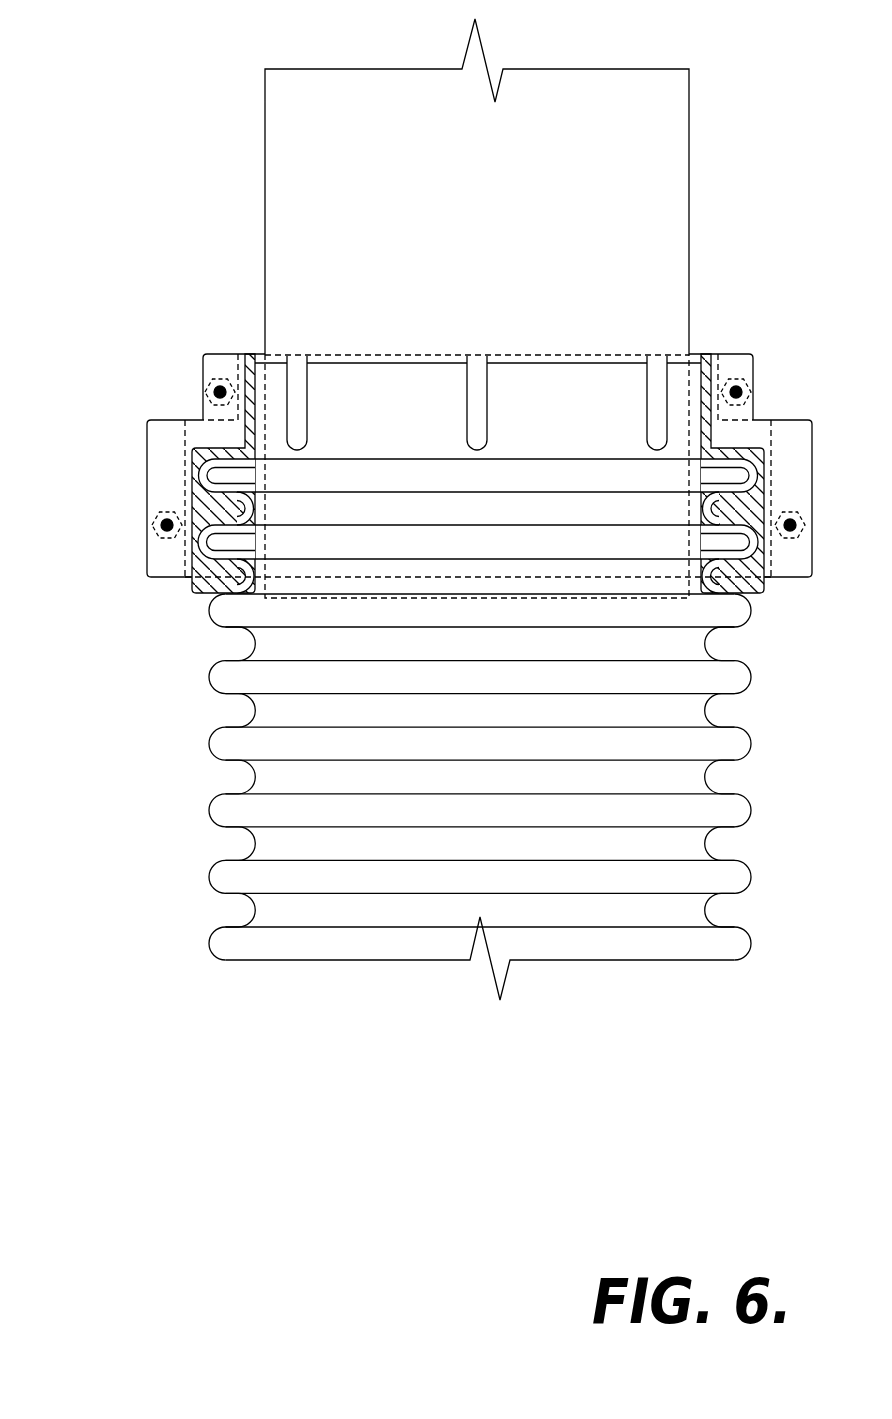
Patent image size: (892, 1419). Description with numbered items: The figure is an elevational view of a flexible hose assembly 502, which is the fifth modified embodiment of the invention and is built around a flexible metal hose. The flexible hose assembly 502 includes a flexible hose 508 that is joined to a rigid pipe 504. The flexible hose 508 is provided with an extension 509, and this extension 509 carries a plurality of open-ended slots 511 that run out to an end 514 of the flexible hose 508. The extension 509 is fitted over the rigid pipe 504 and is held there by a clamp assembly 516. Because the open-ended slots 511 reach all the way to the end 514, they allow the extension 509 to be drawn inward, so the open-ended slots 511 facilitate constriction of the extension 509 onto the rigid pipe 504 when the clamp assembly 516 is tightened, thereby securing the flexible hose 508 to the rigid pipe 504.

The flexible hose assembly 502 is at (165, 242).
The rigid pipe 504 is at (689, 62).
The flexible hose 508 is at (733, 960).
The extension 509 is at (423, 432).
The open-ended slots 511 is at (644, 378).
The end 514 is at (394, 364).
The clamp assembly 516 is at (757, 357).